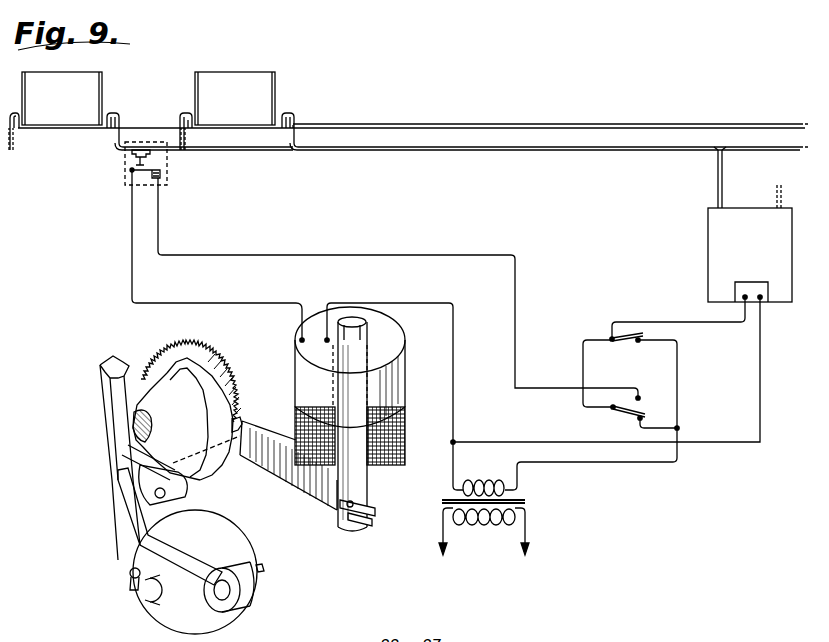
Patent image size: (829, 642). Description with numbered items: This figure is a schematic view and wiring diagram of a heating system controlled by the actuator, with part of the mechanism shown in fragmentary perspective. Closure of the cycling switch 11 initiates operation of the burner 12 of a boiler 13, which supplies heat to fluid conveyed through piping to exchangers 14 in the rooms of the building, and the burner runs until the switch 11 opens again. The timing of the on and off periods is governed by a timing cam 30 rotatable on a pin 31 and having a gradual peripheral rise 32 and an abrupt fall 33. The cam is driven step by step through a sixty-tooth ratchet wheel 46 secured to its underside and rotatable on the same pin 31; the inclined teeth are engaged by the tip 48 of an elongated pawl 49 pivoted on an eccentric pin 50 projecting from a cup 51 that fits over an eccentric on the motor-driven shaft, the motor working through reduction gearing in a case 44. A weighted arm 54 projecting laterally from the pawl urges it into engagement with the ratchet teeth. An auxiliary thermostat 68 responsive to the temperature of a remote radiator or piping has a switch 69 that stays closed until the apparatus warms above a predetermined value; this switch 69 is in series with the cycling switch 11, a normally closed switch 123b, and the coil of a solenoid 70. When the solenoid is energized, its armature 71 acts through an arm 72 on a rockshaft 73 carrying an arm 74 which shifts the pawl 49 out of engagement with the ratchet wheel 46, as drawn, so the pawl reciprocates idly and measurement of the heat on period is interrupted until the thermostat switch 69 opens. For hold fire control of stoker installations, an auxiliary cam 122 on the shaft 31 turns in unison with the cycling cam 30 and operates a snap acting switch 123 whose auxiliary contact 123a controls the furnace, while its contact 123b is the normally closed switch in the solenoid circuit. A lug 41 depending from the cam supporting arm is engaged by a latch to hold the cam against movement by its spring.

The exchangers 14 is at (205, 80).
The boiler 13 is at (715, 225).
The burner 12 is at (735, 283).
The switch 11 is at (624, 331).
The auxiliary thermostat 68 is at (140, 184).
The switch 69 is at (165, 175).
The solenoid 70 is at (385, 348).
The solenoid armature 71 is at (352, 478).
The arm 72 is at (286, 475).
The rockshaft 73 is at (195, 488).
The arm 74 is at (140, 478).
The case 44 is at (222, 528).
The weighted arm 54 is at (235, 607).
The eccentric pin 50 is at (128, 580).
The cup 51 is at (150, 595).
The tip 48 is at (102, 362).
The pawl 49 is at (110, 422).
The pin 31 is at (137, 427).
The ratchet wheel 46 is at (148, 345).
The auxiliary cam 122 is at (165, 385).
The timing cam 30 is at (200, 360).
The gradual peripheral rise 32 is at (226, 374).
The abrupt fall 33 is at (238, 407).
The snap acting switch 123 is at (647, 398).
The auxiliary contact 123a is at (648, 420).
The normally closed switch 123b is at (643, 398).
The lug 41 is at (484, 561).